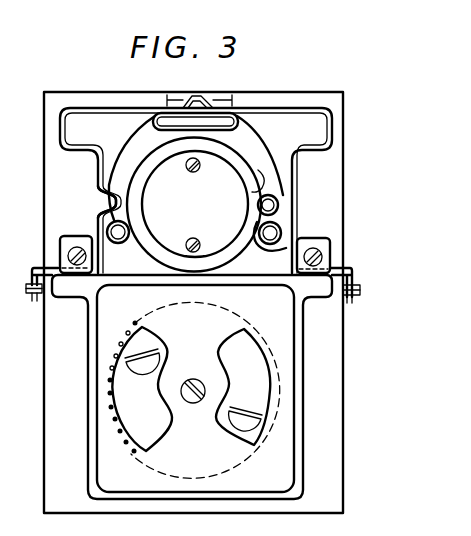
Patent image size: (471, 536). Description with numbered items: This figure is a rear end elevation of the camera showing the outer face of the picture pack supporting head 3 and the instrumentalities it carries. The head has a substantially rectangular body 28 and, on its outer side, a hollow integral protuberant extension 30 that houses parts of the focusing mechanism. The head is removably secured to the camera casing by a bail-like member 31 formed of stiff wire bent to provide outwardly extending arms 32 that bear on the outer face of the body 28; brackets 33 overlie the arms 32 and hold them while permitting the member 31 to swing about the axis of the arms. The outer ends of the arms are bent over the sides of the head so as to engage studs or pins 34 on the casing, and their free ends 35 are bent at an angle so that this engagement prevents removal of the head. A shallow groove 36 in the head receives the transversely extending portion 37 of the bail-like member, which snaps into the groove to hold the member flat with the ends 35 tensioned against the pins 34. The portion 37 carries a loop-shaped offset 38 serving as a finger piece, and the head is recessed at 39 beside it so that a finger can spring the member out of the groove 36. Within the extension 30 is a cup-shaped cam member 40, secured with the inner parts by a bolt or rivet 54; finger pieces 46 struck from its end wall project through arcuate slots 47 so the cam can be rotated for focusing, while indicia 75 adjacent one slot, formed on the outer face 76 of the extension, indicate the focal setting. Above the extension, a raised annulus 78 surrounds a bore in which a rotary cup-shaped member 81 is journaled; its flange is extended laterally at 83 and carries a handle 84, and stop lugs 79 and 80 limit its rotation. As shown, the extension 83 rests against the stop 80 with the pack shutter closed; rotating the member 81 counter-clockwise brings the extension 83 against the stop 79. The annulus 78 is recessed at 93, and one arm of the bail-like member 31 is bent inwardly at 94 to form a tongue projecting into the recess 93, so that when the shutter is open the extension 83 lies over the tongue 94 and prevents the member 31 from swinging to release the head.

The head 3 is at (44, 158).
The body 28 is at (333, 442).
The protuberant extension 30 is at (305, 395).
The bail-like member 31 is at (297, 160).
The arms 32 is at (53, 268).
The brackets 33 is at (80, 238).
The studs or pins 34 is at (26, 287).
The free ends 35 is at (33, 300).
The groove 36 is at (248, 114).
The transversely extending portion 37 is at (147, 108).
The loop-shaped offset 38 is at (195, 98).
The recess 39 is at (178, 98).
The cam member 40 is at (238, 313).
The finger pieces 46 is at (135, 366).
The openings or slots 47 is at (230, 434).
The bolt or rivet 54 is at (193, 379).
The indicia 75 is at (100, 416).
The outer face 76 is at (105, 470).
The raised annulus 78 is at (249, 139).
The stop lug 79 is at (114, 240).
The stop lug 80 is at (274, 228).
The rotary cup-shaped member 81 is at (224, 207).
The extension 83 is at (261, 172).
The finger piece or handle 84 is at (273, 197).
The recess 93 is at (108, 180).
The tongue or finger portion 94 is at (103, 200).